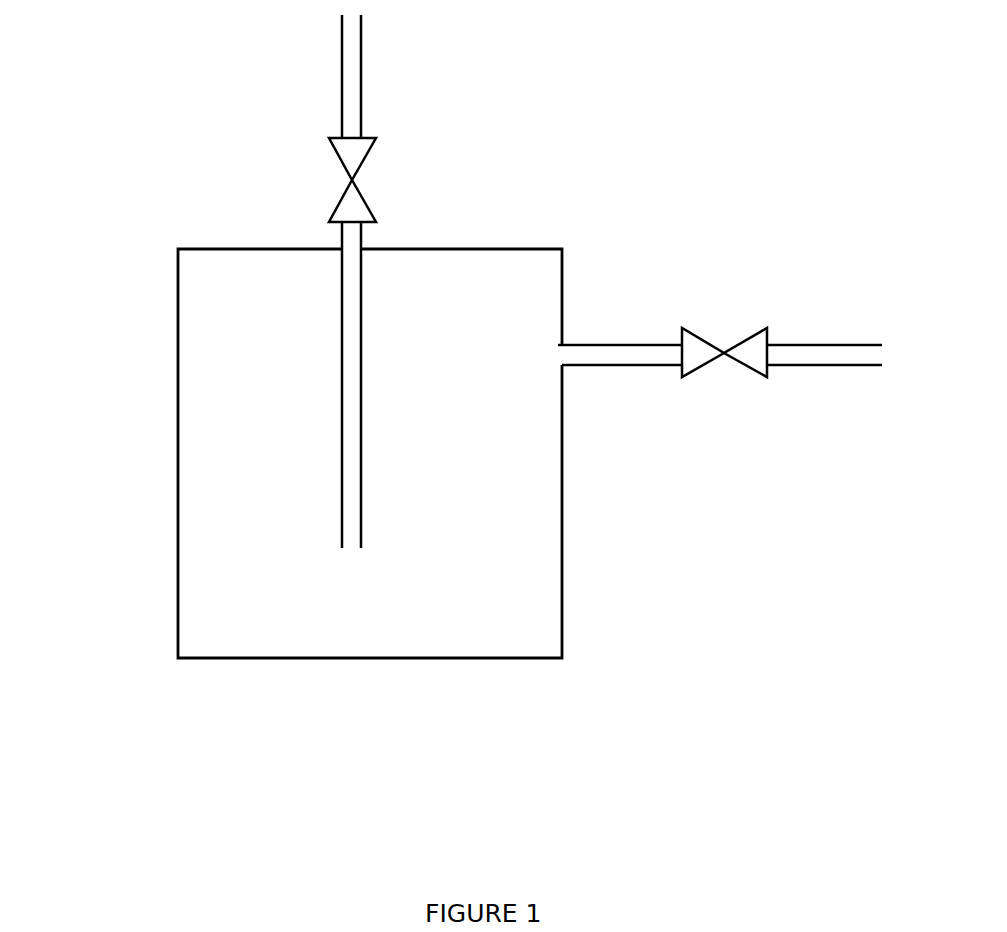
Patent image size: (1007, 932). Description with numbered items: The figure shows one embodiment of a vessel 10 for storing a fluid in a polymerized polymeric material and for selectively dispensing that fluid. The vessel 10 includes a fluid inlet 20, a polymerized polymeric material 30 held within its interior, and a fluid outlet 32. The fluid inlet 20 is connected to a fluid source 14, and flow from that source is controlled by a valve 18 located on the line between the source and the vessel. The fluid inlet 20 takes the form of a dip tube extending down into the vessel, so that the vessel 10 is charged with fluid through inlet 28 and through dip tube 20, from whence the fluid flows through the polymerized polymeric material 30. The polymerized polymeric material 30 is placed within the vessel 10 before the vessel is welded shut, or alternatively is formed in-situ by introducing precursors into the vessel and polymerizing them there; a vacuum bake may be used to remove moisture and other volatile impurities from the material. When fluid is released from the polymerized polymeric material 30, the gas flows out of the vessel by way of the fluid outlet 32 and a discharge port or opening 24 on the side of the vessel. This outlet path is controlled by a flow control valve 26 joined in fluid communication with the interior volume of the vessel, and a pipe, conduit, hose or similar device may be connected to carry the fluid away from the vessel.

The vessel 10 is at (176, 503).
The fluid source 14 is at (361, 75).
The valve 18 is at (352, 182).
The fluid inlet (dip tube) 20 is at (362, 294).
The discharge port 24 is at (885, 358).
The flow control valve 26 is at (722, 340).
The inlet 28 is at (358, 537).
The polymerized polymeric material 30 is at (492, 478).
The fluid outlet 32 is at (562, 345).